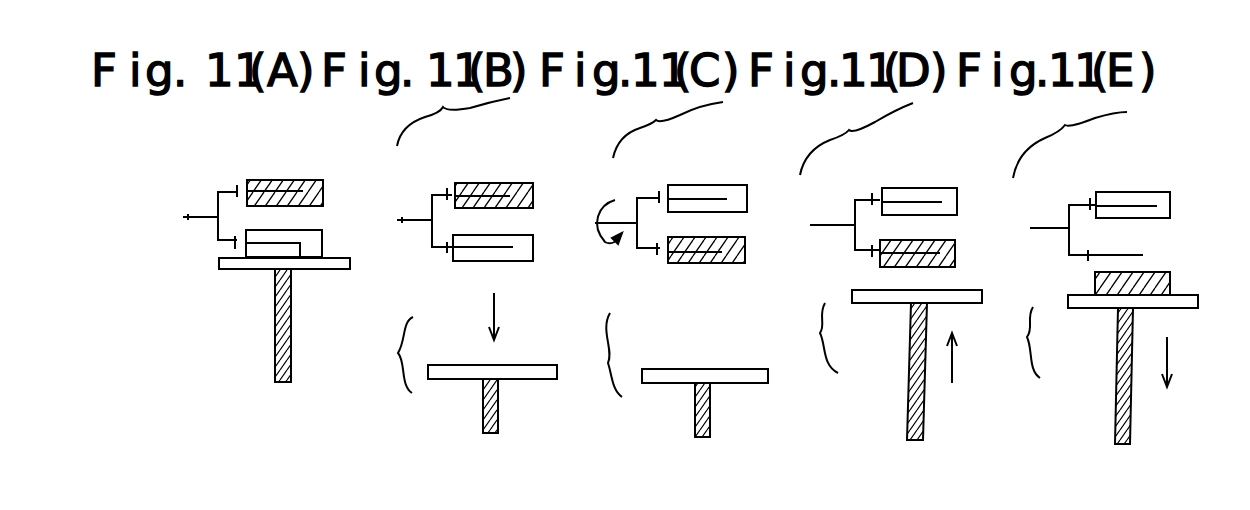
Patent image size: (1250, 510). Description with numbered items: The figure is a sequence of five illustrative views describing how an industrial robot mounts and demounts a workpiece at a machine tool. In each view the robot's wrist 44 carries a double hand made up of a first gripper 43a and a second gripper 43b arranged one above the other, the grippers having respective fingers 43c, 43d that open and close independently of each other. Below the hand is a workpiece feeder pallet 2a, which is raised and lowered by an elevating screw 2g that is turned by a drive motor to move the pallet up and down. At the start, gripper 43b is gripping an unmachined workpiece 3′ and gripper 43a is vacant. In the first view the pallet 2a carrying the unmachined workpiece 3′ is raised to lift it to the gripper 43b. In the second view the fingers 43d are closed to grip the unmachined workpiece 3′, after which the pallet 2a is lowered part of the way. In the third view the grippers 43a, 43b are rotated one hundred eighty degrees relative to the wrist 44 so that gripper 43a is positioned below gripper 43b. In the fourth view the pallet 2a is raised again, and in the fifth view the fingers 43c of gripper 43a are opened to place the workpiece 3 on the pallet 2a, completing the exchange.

In FIG. 11A, the workpiece feeder pallet 2a is at (242, 270).
In FIG. 11B, the workpiece feeder pallet 2a is at (445, 382).
In FIG. 11C, the workpiece feeder pallet 2a is at (658, 387).
In FIG. 11D, the workpiece feeder pallet 2a is at (877, 305).
In FIG. 11E, the workpiece feeder pallet 2a is at (1085, 308).
In FIG. 11A, the elevating screw 2g is at (273, 365).
In FIG. 11B, the elevating screw 2g is at (483, 428).
In FIG. 11C, the elevating screw 2g is at (693, 430).
In FIG. 11D, the elevating screw 2g is at (908, 407).
In FIG. 11E, the elevating screw 2g is at (1117, 407).
In FIG. 11A, the workpiece 3 is at (321, 183).
In FIG. 11B, the workpiece 3 is at (533, 185).
In FIG. 11C, the workpiece 3 is at (745, 255).
In FIG. 11D, the workpiece 3 is at (955, 253).
In FIG. 11E, the workpiece 3 is at (1167, 287).
In FIG. 11A, the unmachined workpiece 3′ is at (321, 238).
In FIG. 11B, the unmachined workpiece 3′ is at (537, 237).
In FIG. 11C, the unmachined workpiece 3′ is at (747, 190).
In FIG. 11D, the unmachined workpiece 3′ is at (958, 198).
In FIG. 11E, the unmachined workpiece 3′ is at (1168, 207).
In FIG. 11A, the first gripper 43a is at (235, 190).
In FIG. 11B, the first gripper 43a is at (442, 193).
In FIG. 11C, the first gripper 43a is at (648, 252).
In FIG. 11D, the first gripper 43a is at (862, 252).
In FIG. 11E, the first gripper 43a is at (1070, 260).
In FIG. 11A, the second gripper 43b is at (227, 245).
In FIG. 11B, the second gripper 43b is at (438, 252).
In FIG. 11C, the second gripper 43b is at (659, 172).
In FIG. 11D, the second gripper 43b is at (873, 198).
In FIG. 11E, the second gripper 43b is at (1078, 202).
In FIG. 11E, the fingers of first gripper 43c is at (1143, 255).
In FIG. 11A, the fingers of second gripper 43d is at (300, 258).
In FIG. 11B, the fingers of second gripper 43d is at (513, 247).
In FIG. 11A, the wrist 44 is at (187, 217).
In FIG. 11B, the wrist 44 is at (403, 222).
In FIG. 11C, the wrist 44 is at (598, 232).
In FIG. 11D, the wrist 44 is at (825, 223).
In FIG. 11E, the wrist 44 is at (1048, 228).